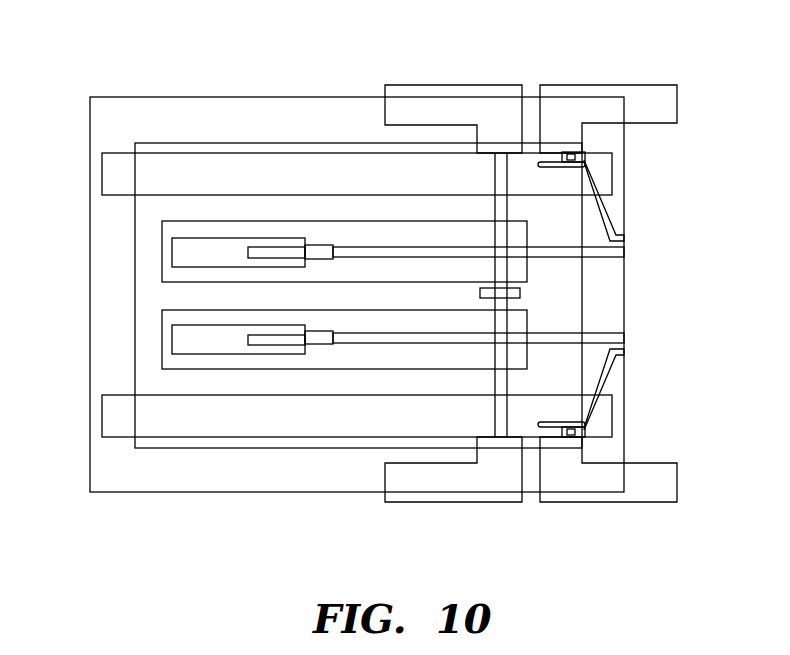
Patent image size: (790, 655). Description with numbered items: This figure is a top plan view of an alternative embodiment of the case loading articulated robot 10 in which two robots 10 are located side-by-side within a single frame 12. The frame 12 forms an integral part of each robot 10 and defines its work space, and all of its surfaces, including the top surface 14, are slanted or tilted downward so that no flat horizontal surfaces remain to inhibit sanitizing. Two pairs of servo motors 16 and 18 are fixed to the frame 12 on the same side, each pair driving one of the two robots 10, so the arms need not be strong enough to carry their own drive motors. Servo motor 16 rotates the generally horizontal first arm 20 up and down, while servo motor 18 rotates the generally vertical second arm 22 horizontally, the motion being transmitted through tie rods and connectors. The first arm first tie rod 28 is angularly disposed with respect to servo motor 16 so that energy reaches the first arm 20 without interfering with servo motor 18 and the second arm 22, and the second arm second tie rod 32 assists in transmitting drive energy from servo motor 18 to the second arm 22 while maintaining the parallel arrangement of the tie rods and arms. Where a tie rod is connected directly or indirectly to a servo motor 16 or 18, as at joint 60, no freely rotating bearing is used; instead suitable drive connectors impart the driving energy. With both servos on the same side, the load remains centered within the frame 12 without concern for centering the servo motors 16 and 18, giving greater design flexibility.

The case loading articulated robot 10 is at (115, 112).
The frame 12 is at (290, 107).
The top surface 14 is at (113, 178).
The servo motor 16 is at (480, 90).
The servo motor 18 is at (650, 88).
The first arm 20 is at (207, 248).
The second arm 22 is at (162, 250).
The first arm first tie rod 28 is at (615, 208).
The second arm second tie rod 32 is at (385, 248).
The joint 60 is at (577, 157).